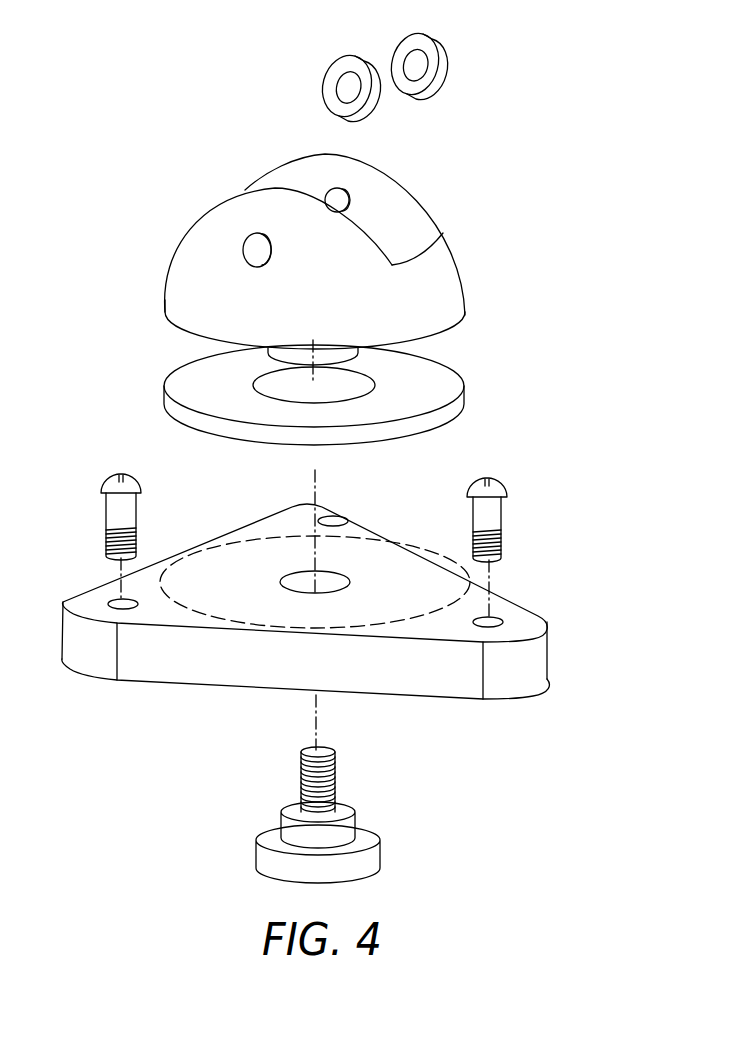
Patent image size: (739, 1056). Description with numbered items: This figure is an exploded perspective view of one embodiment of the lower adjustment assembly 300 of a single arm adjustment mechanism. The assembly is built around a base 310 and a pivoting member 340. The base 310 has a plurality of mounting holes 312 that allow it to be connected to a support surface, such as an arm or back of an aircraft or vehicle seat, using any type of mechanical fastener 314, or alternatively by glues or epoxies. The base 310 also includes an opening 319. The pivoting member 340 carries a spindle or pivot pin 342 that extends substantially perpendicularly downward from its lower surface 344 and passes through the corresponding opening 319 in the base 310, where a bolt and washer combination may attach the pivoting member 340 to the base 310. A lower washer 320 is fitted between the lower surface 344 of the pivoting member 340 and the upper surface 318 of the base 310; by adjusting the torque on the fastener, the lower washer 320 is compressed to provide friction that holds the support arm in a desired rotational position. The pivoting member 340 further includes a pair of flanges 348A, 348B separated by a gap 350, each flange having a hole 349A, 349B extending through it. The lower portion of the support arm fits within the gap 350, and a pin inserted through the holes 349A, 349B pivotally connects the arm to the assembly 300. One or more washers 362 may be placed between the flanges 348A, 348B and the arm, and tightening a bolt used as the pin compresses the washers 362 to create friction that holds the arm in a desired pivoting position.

The lower adjustment assembly 300 is at (101, 704).
The base 310 is at (540, 667).
The mounting holes 312 is at (63, 601).
The mechanical fastener 314 is at (101, 487).
The upper surface 318 is at (221, 544).
The opening 319 is at (352, 583).
The lower washer 320 is at (462, 388).
The pivoting member 340 is at (335, 247).
The spindle or pivot pin 342 is at (274, 355).
The lower surface 344 is at (462, 336).
The flange 348A is at (456, 246).
The flange 348B is at (212, 215).
The hole 349A is at (351, 193).
The hole 349B is at (272, 250).
The gap 350 is at (321, 160).
The washers 362 is at (357, 56).